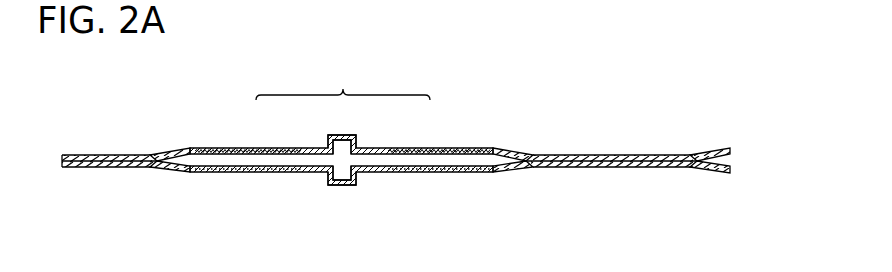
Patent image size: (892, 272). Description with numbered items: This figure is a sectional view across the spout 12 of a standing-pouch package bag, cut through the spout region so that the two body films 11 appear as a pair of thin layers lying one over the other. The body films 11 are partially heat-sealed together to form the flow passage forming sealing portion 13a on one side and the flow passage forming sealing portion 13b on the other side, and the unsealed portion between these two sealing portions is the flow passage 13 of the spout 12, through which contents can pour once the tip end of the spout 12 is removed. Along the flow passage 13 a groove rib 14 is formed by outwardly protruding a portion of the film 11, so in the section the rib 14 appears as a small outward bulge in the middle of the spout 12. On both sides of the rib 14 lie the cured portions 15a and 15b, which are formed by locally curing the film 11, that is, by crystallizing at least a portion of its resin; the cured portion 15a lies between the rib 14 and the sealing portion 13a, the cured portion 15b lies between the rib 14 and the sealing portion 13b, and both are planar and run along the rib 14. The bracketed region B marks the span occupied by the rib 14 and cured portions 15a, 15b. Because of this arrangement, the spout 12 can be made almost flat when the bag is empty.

The body film 11 is at (727, 150).
The spout 12 is at (153, 150).
The flow passage 13 is at (321, 160).
The flow passage forming sealing portion 13a is at (113, 167).
The flow passage forming sealing portion 13b is at (605, 168).
The groove rib 14 is at (348, 134).
The cured portion 15a is at (227, 147).
The cured portion 15b is at (451, 148).
The region B is at (343, 77).